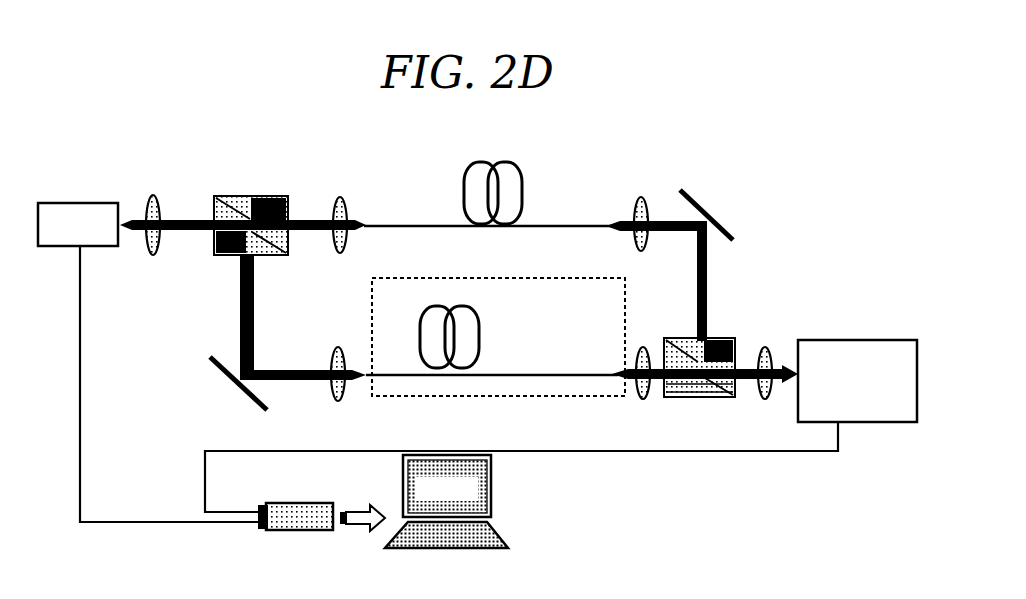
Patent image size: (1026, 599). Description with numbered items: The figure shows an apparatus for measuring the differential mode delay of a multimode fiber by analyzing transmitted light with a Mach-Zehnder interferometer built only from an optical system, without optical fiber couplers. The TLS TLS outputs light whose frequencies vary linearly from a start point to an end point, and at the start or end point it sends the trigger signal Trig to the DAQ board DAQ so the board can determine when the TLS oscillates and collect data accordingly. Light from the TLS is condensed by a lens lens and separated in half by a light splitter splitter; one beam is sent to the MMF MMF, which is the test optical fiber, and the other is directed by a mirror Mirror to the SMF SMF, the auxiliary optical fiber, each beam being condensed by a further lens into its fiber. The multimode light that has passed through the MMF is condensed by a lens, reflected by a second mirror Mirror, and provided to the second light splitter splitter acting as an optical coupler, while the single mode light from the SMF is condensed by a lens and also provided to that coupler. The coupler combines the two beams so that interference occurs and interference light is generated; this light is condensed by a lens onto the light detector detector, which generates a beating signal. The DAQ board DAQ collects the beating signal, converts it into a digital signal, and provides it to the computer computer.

The element TLS is at (78, 224).
The trigger signal Trig is at (140, 384).
The element lens is at (459, 286).
The light splitter is at (479, 298).
The element MMF is at (491, 179).
The mirror Mirror is at (477, 298).
The light detector is at (857, 381).
The element SMF is at (481, 337).
The DAQ board DAQ is at (295, 504).
The element computer is at (507, 501).